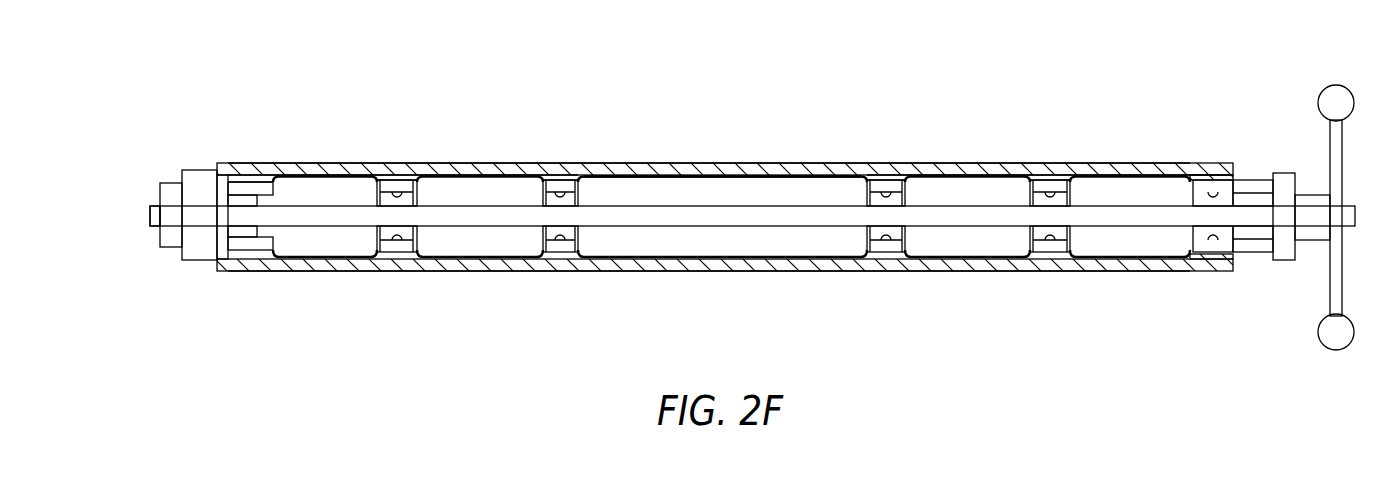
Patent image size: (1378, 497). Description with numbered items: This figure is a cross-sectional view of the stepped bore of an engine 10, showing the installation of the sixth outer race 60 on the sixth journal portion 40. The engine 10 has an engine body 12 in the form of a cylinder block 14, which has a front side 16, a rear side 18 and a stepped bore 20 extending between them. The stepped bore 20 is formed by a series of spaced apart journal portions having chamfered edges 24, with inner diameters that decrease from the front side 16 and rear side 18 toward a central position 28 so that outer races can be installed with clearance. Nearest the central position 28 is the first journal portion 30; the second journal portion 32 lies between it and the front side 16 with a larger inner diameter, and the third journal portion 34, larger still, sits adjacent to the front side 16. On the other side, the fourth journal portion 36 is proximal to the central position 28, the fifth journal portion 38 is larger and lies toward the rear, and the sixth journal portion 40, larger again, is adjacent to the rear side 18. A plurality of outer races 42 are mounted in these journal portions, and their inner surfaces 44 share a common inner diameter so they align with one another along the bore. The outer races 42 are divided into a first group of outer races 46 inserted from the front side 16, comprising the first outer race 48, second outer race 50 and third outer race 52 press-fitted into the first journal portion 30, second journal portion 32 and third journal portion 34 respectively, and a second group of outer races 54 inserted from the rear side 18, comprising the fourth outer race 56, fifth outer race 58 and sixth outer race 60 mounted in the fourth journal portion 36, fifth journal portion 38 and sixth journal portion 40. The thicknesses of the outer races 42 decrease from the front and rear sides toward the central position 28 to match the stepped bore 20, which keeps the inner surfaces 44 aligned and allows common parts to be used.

The engine 10 is at (134, 155).
The engine body 12 is at (214, 156).
The cylinder block 14 is at (211, 166).
The front side 16 is at (212, 160).
The rear side 18 is at (1262, 173).
The stepped bore 20 is at (238, 243).
The chamfered edges 24 is at (218, 267).
The central position 28 is at (865, 122).
The first journal portion 30 is at (588, 263).
The second journal portion 32 is at (425, 263).
The third journal portion 34 is at (268, 265).
The fourth journal portion 36 is at (910, 263).
The fifth journal portion 38 is at (1085, 263).
The sixth journal portion 40 is at (1240, 265).
The outer races 42 is at (238, 163).
The inner surfaces 44 is at (385, 192).
The first group of outer races 46 is at (583, 357).
The first outer race 48 is at (567, 163).
The second outer race 50 is at (402, 163).
The third outer race 52 is at (255, 163).
The second group of outer races 54 is at (1268, 362).
The fourth outer race 56 is at (900, 163).
The fifth outer race 58 is at (1060, 163).
The sixth outer race 60 is at (1288, 172).